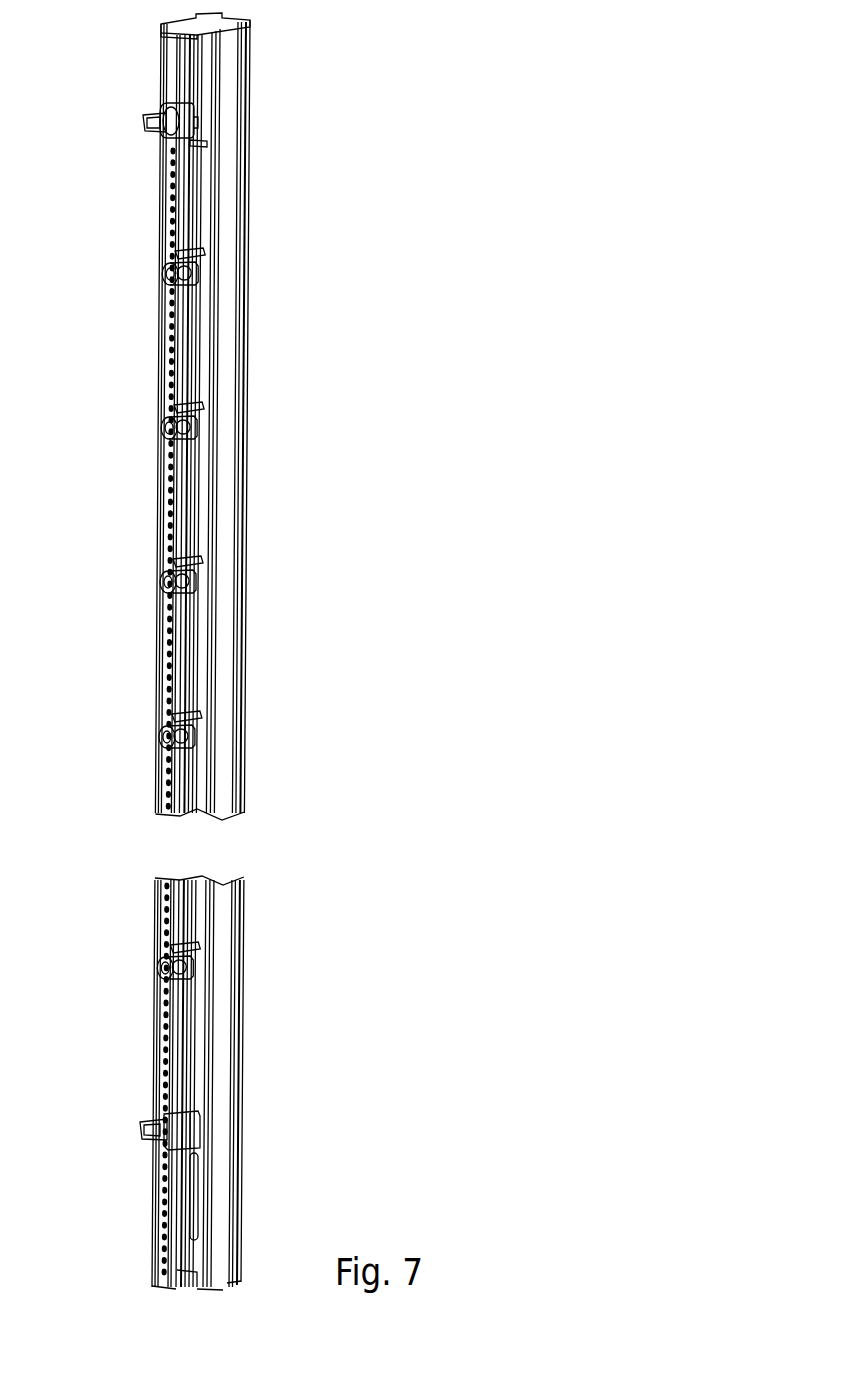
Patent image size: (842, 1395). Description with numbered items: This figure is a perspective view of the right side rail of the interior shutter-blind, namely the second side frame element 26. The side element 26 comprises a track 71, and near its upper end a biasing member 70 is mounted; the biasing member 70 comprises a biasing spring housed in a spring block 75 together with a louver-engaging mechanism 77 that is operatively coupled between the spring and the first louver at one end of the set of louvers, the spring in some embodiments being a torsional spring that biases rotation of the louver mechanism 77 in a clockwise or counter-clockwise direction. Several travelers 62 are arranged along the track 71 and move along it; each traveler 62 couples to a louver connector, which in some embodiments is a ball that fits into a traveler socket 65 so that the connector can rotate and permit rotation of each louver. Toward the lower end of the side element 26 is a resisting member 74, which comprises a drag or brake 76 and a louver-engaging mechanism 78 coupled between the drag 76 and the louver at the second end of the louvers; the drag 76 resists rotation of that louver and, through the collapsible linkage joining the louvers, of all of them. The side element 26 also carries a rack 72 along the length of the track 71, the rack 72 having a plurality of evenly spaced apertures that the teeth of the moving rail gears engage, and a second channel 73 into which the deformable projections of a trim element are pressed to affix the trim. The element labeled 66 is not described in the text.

The second side frame element 26 is at (410, 78).
The biasing member 70 is at (133, 83).
The louver-engaging mechanism 77 is at (150, 120).
The spring block 75 is at (200, 93).
The track 71 is at (185, 188).
The travelers 62 is at (142, 312).
The traveler socket 65 is at (195, 280).
The rack 72 is at (170, 500).
The second channel 73 is at (238, 543).
The resisting member 74 is at (178, 1104).
The drag 76 is at (197, 1133).
The louver-engaging mechanism 78 is at (150, 1127).
The slot 66 is at (188, 1230).